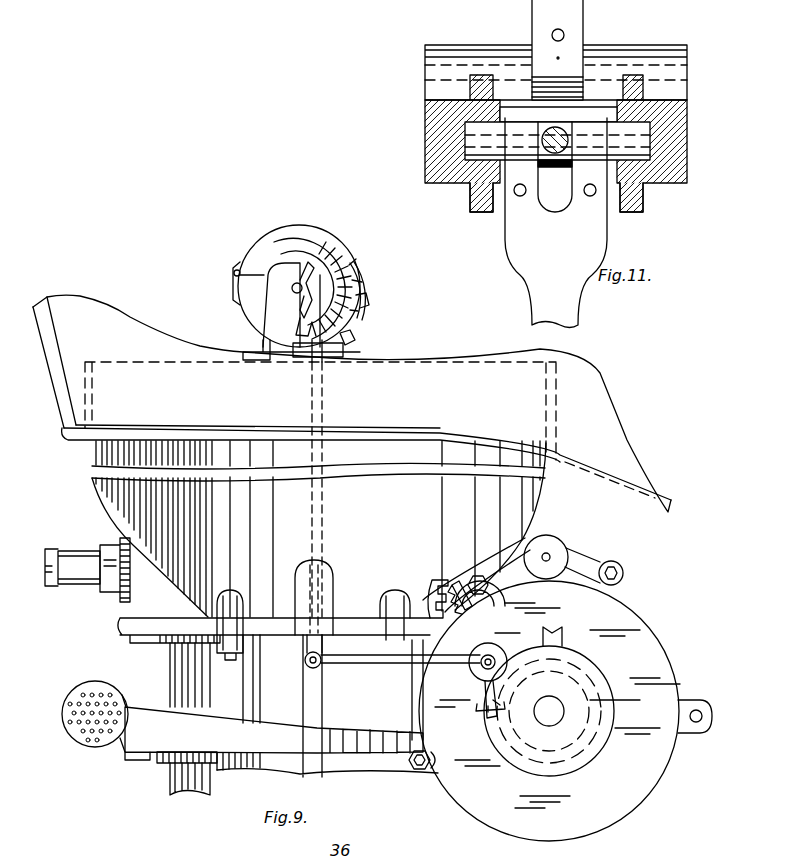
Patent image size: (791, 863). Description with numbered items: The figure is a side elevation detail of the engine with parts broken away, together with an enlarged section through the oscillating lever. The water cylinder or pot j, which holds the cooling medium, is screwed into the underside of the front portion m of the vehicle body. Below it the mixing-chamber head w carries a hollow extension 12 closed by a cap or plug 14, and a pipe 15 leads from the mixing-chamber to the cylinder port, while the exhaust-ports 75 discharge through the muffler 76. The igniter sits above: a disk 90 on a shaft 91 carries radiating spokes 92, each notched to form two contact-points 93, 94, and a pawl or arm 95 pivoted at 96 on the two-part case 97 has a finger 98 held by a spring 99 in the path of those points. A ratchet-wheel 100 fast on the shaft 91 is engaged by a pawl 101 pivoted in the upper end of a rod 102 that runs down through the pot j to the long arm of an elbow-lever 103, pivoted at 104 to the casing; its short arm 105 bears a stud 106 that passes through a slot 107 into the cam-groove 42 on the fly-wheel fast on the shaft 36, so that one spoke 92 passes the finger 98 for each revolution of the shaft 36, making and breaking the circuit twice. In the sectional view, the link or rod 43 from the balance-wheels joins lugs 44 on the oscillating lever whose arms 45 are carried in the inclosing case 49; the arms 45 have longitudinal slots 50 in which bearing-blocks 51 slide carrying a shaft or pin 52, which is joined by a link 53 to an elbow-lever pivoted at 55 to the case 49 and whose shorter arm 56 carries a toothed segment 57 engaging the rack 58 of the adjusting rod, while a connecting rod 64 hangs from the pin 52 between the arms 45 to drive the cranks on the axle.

In FIG. 9, the front portion of the vehicle body m is at (64, 395).
In FIG. 9, the water cylinder or pot j is at (92, 478).
In FIG. 9, the cap or plug 14 is at (46, 549).
In FIG. 9, the hollow extension 12 is at (78, 551).
In FIG. 9, the head w is at (120, 598).
In FIG. 9, the muffler 76 is at (66, 722).
In FIG. 9, the exhaust-ports 75 is at (274, 733).
In FIG. 9, the pipe 15 is at (170, 786).
In FIG. 9, the elbow-lever 103 is at (392, 663).
In FIG. 9, the pivot 104 is at (490, 656).
In FIG. 9, the short arm 105 is at (486, 694).
In FIG. 9, the stud or projection 106 is at (480, 712).
In FIG. 9, the slot 107 is at (499, 706).
In FIG. 9, the shaft 36 is at (551, 718).
In FIG. 9, the cam-groove 42 is at (595, 752).
In FIG. 9, the pivot 55 is at (546, 553).
In FIG. 9, the shorter arm 56 is at (500, 556).
In FIG. 9, the toothed segment 57 is at (458, 578).
In FIG. 9, the toothed portion or rack 58 is at (436, 598).
In FIG. 9, the inclosing case 49 is at (622, 577).
In FIG. 9, the disk 90 is at (327, 243).
In FIG. 9, the shaft 91 is at (294, 292).
In FIG. 9, the radiating spokes or arms 92 is at (345, 262).
In FIG. 9, the contact-point 93 is at (357, 262).
In FIG. 9, the contact-point 94 is at (362, 290).
In FIG. 9, the pawl or arm 95 is at (358, 317).
In FIG. 9, the pivot 96 is at (355, 340).
In FIG. 9, the two-part case 97 is at (264, 252).
In FIG. 9, the finger 98 is at (360, 268).
In FIG. 9, the spring 99 is at (369, 300).
In FIG. 9, the ratchet-wheel 100 is at (308, 270).
In FIG. 9, the pawl 101 is at (298, 315).
In FIG. 9, the rod 102 is at (314, 360).
In FIG. 11, the link or rod 43 is at (583, 18).
In FIG. 11, the lugs or ears 44 is at (484, 40).
In FIG. 11, the arms 45 is at (445, 184).
In FIG. 11, the longitudinal slots or guideways 50 is at (650, 128).
In FIG. 11, the bearing-blocks 51 is at (628, 150).
In FIG. 11, the shaft or pin 52 is at (476, 190).
In FIG. 11, the link 53 is at (555, 170).
In FIG. 11, the link or connecting rod 64 is at (530, 270).